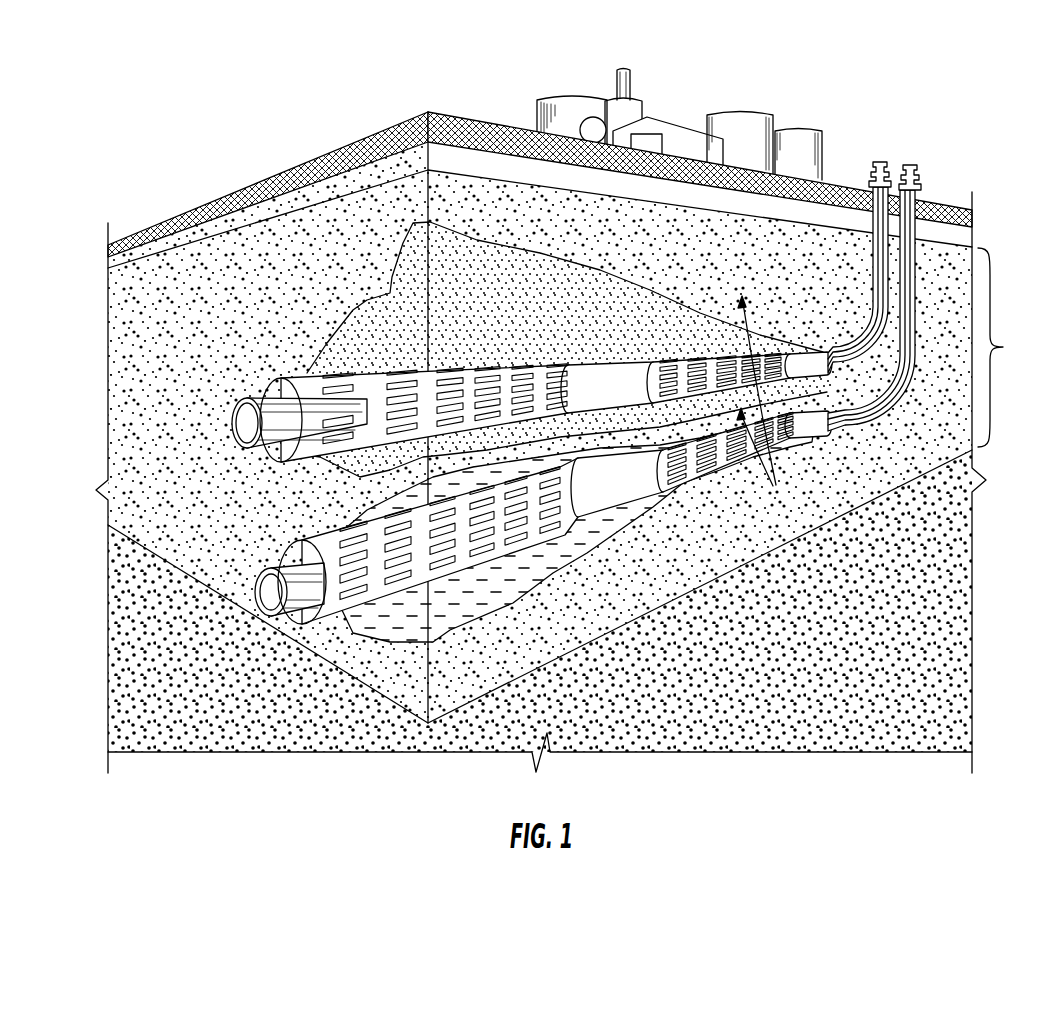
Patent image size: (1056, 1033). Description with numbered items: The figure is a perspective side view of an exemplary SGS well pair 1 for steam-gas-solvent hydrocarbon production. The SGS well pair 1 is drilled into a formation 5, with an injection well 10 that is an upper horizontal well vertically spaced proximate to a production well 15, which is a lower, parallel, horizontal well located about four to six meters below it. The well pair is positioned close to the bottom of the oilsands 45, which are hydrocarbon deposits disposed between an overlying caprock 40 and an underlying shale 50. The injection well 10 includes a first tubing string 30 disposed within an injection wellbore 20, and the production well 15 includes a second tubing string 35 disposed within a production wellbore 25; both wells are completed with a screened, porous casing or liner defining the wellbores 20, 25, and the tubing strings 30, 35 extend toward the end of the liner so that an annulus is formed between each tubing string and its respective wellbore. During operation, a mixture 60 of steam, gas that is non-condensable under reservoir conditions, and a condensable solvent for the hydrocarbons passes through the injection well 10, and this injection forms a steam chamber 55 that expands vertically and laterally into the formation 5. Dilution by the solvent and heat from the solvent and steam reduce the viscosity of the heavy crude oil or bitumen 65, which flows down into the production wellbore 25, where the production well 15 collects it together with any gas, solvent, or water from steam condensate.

The SGS well pair 1 is at (538, 421).
The formation 5 is at (999, 347).
The injection well 10 is at (878, 160).
The production well 15 is at (912, 163).
The injection wellbore 20 is at (526, 392).
The production wellbore 25 is at (536, 517).
The first tubing string 30 is at (243, 402).
The second tubing string 35 is at (261, 571).
The caprock 40 is at (108, 262).
The oilsands 45 is at (116, 336).
The shale 50 is at (203, 684).
The steam chamber 55 is at (352, 311).
The mixture 60 is at (504, 327).
The crude oil or bitumen 65 is at (760, 405).